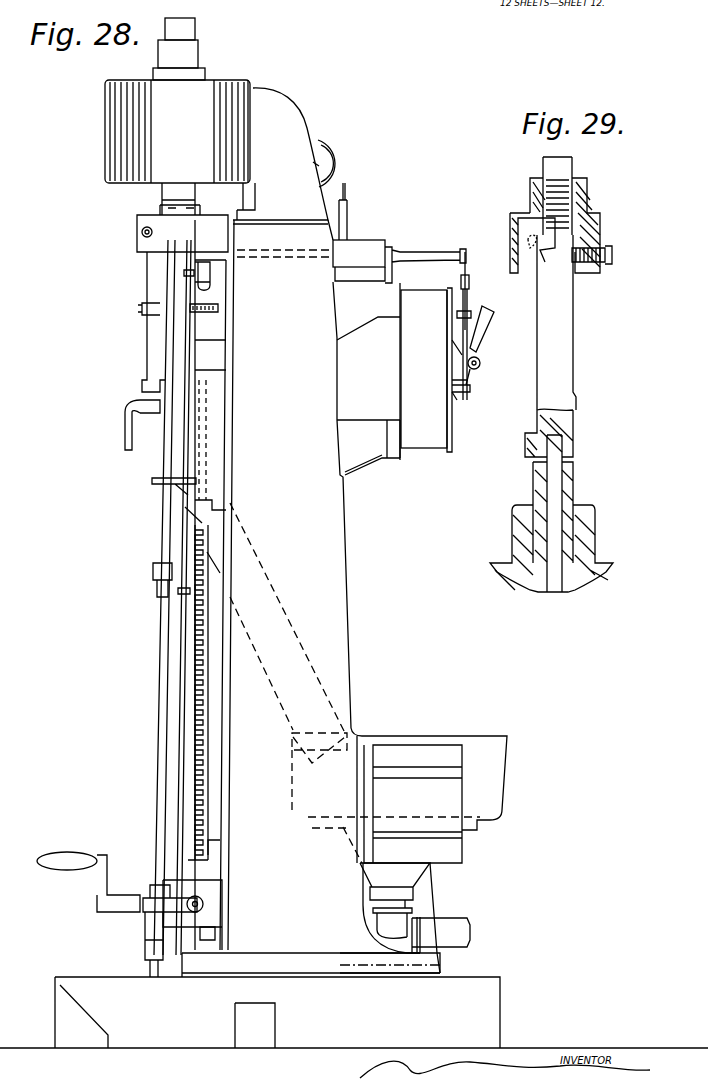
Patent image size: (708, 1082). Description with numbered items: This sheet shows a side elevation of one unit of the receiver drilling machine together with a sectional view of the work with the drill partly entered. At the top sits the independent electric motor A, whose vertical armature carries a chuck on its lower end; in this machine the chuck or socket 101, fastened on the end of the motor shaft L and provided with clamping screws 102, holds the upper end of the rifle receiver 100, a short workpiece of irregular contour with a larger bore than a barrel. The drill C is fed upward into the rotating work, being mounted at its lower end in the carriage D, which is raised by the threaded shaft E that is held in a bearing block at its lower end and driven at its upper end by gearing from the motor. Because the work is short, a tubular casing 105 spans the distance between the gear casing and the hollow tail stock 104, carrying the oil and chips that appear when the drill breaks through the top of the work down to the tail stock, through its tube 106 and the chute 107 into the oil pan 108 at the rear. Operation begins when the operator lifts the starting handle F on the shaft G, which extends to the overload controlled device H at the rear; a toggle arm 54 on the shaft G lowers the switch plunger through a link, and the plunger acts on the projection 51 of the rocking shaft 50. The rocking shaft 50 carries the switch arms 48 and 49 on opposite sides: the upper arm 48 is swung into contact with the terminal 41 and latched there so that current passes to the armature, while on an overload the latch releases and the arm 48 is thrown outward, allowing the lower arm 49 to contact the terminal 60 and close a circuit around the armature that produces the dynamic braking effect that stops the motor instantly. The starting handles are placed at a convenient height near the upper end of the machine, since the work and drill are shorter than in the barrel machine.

In FIG. 28, the electric motor A is at (177, 100).
In FIG. 28, the shaft G is at (363, 258).
In FIG. 28, the motor controlling mechanism H is at (426, 370).
In FIG. 28, the starting handle F is at (205, 277).
In FIG. 28, the threaded shaft E is at (192, 727).
In FIG. 28, the carriage D is at (144, 885).
In FIG. 29, the motor shaft L is at (548, 158).
In FIG. 29, the drill C is at (552, 497).
In FIG. 28, the terminal 41 is at (468, 311).
In FIG. 28, the switch arm 48 is at (490, 332).
In FIG. 28, the switch arm 49 is at (470, 389).
In FIG. 28, the rocking shaft 50 is at (485, 363).
In FIG. 28, the projection 51 is at (458, 362).
In FIG. 28, the toggle arm 54 is at (466, 258).
In FIG. 28, the terminal 60 is at (455, 396).
In FIG. 29, the receiver 100 is at (560, 360).
In FIG. 29, the chuck or socket 101 is at (583, 228).
In FIG. 29, the clamping screws 102 is at (607, 256).
In FIG. 28, the hollow tail stock 104 is at (158, 464).
In FIG. 29, the hollow tail stock 104 is at (590, 532).
In FIG. 28, the tubular casing 105 is at (150, 340).
In FIG. 28, the tube 106 is at (195, 493).
In FIG. 28, the chute 107 is at (355, 683).
In FIG. 28, the oil pan 108 is at (423, 854).